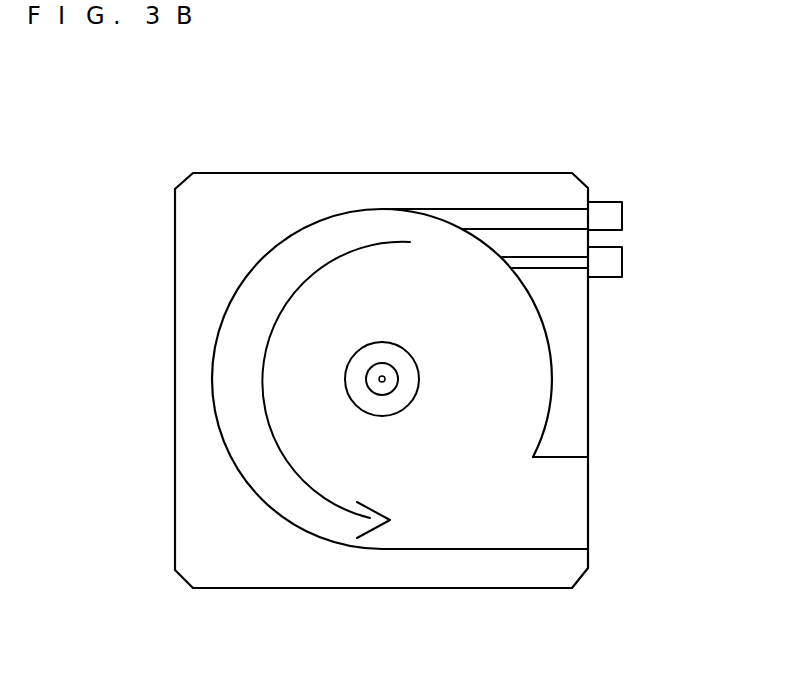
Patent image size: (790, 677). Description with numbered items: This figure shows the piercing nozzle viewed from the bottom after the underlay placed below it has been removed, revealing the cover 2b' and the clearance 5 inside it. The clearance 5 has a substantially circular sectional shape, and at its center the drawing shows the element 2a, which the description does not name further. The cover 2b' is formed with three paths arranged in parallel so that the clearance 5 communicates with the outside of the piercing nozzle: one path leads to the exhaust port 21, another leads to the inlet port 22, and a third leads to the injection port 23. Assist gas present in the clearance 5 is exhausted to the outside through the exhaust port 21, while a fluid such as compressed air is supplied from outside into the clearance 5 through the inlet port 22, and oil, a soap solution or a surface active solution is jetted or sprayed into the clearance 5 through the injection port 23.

The exhaust port 21 is at (562, 508).
The cover 2b' is at (381, 341).
The clearance 5 is at (428, 258).
The hub 2a is at (384, 378).
The inlet port 22 is at (558, 213).
The injection port 23 is at (562, 262).